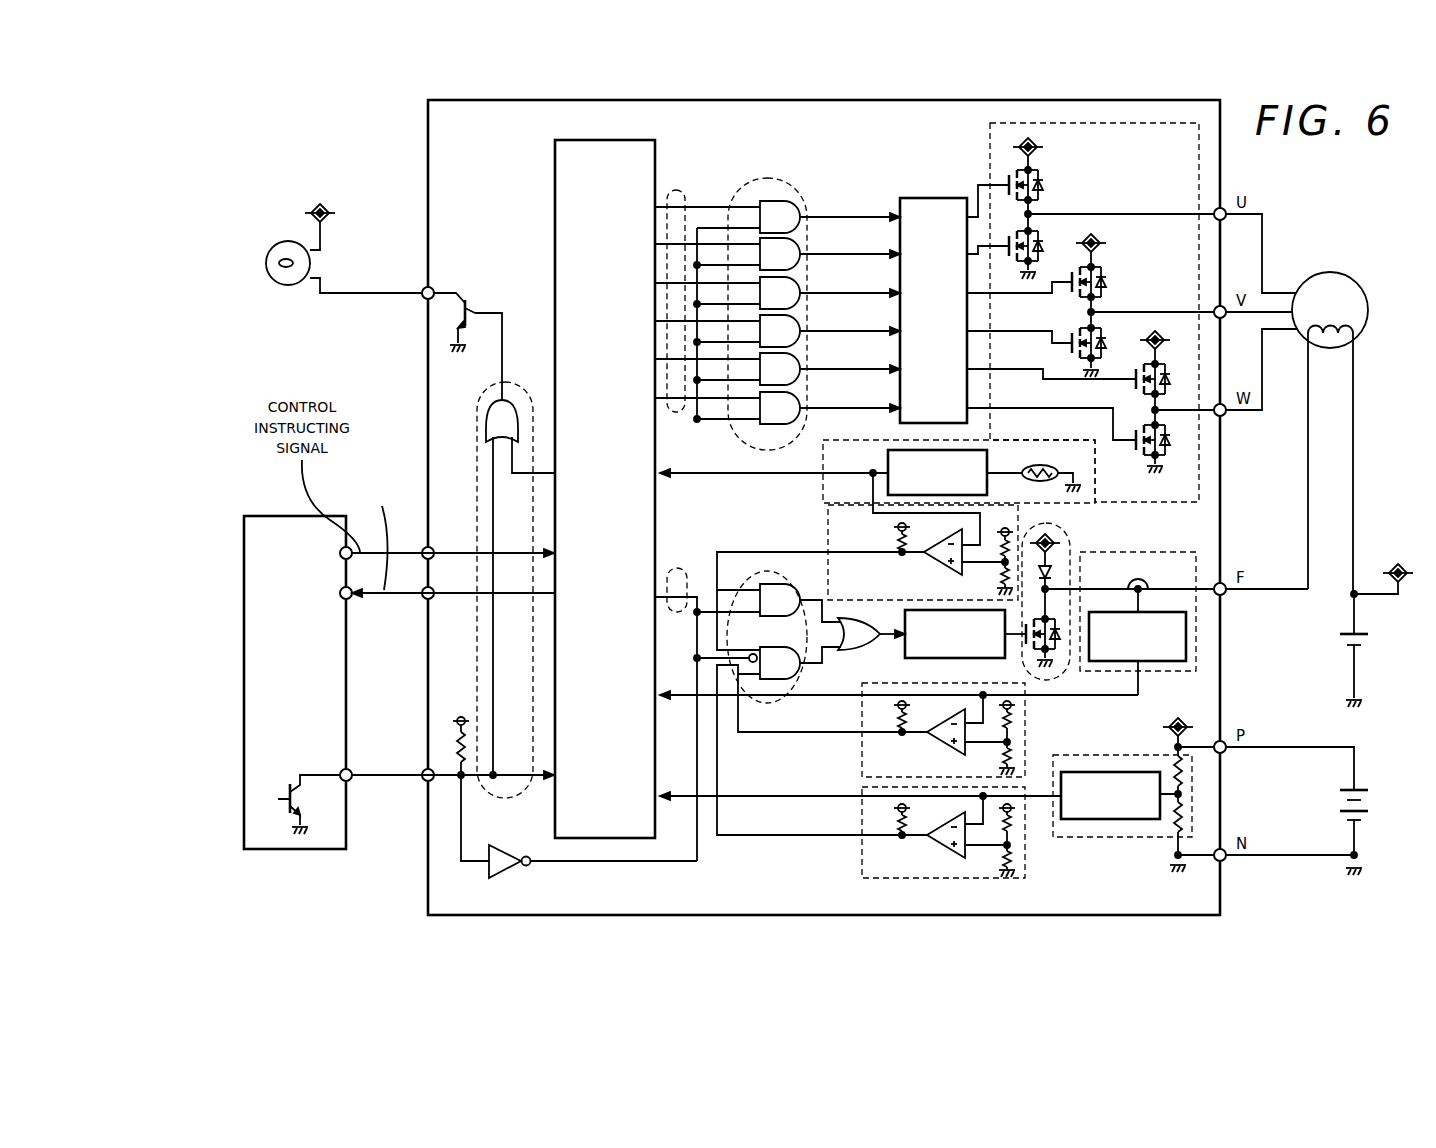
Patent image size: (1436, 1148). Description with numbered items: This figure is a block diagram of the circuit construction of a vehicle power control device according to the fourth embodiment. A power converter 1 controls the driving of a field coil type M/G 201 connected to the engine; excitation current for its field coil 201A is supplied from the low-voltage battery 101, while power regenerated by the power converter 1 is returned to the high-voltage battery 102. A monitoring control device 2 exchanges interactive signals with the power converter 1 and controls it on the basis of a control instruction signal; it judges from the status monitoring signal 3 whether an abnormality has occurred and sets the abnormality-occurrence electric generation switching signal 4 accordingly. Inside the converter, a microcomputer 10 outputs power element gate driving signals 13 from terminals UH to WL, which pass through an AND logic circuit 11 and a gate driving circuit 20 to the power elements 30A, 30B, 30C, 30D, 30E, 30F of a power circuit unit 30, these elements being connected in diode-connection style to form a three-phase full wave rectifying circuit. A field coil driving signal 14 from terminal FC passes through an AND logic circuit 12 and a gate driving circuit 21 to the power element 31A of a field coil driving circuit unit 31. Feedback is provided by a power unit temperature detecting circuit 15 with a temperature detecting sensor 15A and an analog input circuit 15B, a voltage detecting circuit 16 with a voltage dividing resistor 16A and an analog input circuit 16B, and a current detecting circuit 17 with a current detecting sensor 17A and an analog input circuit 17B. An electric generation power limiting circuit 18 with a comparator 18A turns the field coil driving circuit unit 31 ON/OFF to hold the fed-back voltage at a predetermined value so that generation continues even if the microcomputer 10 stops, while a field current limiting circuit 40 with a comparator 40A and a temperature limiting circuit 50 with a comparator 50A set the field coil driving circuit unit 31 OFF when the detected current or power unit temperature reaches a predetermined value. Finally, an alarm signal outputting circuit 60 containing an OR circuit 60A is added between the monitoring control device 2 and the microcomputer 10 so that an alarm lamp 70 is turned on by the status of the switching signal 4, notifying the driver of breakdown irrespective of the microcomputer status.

The power converter 1 is at (428, 125).
The monitoring control device 2 is at (282, 516).
The status monitoring signal 3 is at (383, 596).
The abnormality-occurrence electric generation switching signal 4 is at (391, 776).
The microcomputer 10 is at (656, 160).
The AND logic circuit 11 is at (770, 180).
The AND logic circuit 12 is at (778, 704).
The power element gate driving signals 13 is at (678, 191).
The field coil driving signal 14 is at (683, 558).
The power unit temperature detecting circuit 15 is at (902, 477).
The temperature detecting sensor 15A is at (1062, 467).
The analog input circuit 15B is at (888, 456).
The voltage detecting circuit 16 is at (1151, 810).
The voltage dividing resistor 16A is at (1188, 822).
The analog input circuit 16B is at (1116, 772).
The current detecting circuit 17 is at (1194, 576).
The current detecting sensor 17A is at (1147, 583).
The analog input circuit 17B is at (1151, 663).
The electric generation power limiting circuit 18 is at (868, 801).
The comparator 18A is at (933, 852).
The gate driving circuit 20 is at (930, 198).
The gate driving circuit 21 is at (905, 655).
The power circuit unit 30 is at (1082, 311).
The power element 30A is at (1042, 178).
The power element 30B is at (1105, 272).
The power element 30C is at (1134, 388).
The power element 30D is at (1038, 232).
The power element 30E is at (1101, 330).
The power element 30F is at (1165, 456).
The field coil driving circuit unit 31 is at (1069, 615).
The power element 31A is at (1056, 665).
The field current limiting circuit 40 is at (871, 729).
The comparator 40A is at (933, 750).
The temperature limiting circuit 50 is at (867, 561).
The comparator 50A is at (920, 547).
The alarm signal outputting circuit 60 is at (495, 555).
The OR circuit 60A is at (487, 420).
The alarm lamp 70 is at (280, 246).
The low-voltage battery 101 is at (1370, 641).
The high-voltage battery 102 is at (1370, 805).
The M/G 201 is at (1336, 273).
The field coil 201A is at (1368, 325).